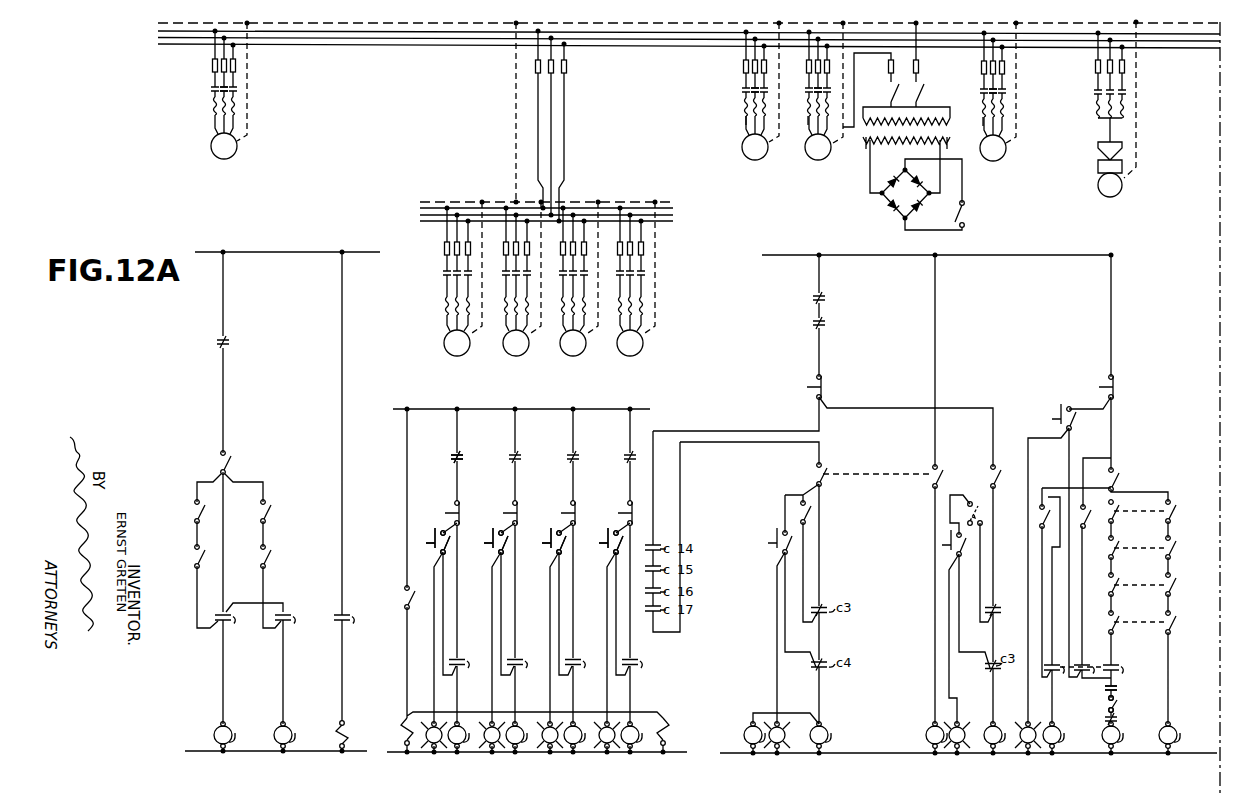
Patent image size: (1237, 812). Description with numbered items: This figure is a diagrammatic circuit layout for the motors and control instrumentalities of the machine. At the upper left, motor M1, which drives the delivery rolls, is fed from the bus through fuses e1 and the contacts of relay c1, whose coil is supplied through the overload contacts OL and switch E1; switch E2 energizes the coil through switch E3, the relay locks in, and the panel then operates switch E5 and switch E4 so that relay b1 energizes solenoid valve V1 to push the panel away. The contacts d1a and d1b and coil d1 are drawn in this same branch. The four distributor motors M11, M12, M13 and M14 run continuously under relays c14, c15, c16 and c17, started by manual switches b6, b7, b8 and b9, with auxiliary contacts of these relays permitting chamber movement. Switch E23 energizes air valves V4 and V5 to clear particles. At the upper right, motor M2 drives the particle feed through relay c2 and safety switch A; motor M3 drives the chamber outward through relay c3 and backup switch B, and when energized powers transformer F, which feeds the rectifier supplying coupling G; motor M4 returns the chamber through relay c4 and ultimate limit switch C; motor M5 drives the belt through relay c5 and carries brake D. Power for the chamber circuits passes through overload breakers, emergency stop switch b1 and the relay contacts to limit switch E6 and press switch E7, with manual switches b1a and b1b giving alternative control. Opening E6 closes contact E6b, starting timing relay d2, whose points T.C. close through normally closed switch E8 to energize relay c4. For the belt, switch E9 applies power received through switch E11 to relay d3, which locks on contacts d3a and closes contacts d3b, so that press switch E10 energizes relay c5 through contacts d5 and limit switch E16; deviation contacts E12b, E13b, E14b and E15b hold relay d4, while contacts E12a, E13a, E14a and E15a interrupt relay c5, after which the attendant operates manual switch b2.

The motor M1 is at (224, 94).
The fuses e1 is at (250, 102).
The relay c1 is at (198, 91).
The motor M2 is at (755, 95).
The series control safety switch A is at (740, 129).
The relay c2 is at (734, 97).
The motor M3 is at (818, 95).
The safety limit switch B is at (807, 130).
The relay c3 is at (802, 98).
The motor M4 is at (993, 96).
The safety ultimate limit switch C is at (974, 130).
The relay c4 is at (973, 98).
The motor M5 is at (1110, 185).
The relay c5 is at (1094, 97).
The brake D is at (1094, 155).
The transformer F is at (887, 95).
The electro-mechanical coupling G is at (968, 208).
The motor M11 is at (457, 281).
The motor M12 is at (516, 281).
The fan motor M13 is at (573, 281).
The fan motor M14 is at (630, 281).
The overload contacts OL is at (687, 509).
The switch E1 is at (218, 465).
The switch E2 is at (194, 511).
The switch E3 is at (192, 561).
The switch E4 is at (267, 557).
The switch E5 is at (267, 510).
The relay contact d1a is at (295, 629).
The relay contact d1b is at (353, 629).
The relay d1 is at (294, 736).
The solenoid valve V1 is at (350, 730).
The switch E23 is at (404, 604).
The solenoid operated valve V4 is at (402, 722).
The solenoid operated valve V5 is at (669, 722).
The relay c14 is at (428, 282).
The relay c15 is at (488, 282).
The relay c16 is at (545, 282).
The relay c17 is at (602, 282).
The manually operated momentarily closable switches b6 is at (435, 527).
The manually operated momentarily closable switches b7 is at (493, 527).
The manually operated momentarily closable switches b8 is at (551, 527).
The manually operated momentarily closable switches b9 is at (608, 527).
The emergency manual stop switch b1 is at (809, 391).
The limit switch E6 is at (812, 473).
The switch E7 is at (810, 515).
The manual switch b1a is at (774, 540).
The contact E6b is at (937, 467).
The switch E8 is at (1002, 474).
The timing contact points T.C. is at (980, 512).
The timing control relay d2 is at (913, 745).
The manual switch b1b is at (943, 545).
The manual control switch b2 is at (1082, 403).
The switch E10 is at (1079, 500).
The switch E11 is at (1116, 479).
The limit switch E9 is at (1038, 523).
The safety limit switch contact E12a is at (1130, 509).
The safety limit switch contact E12b is at (1187, 509).
The safety limit switch contact E13a is at (1130, 546).
The safety limit switch contact E13b is at (1187, 546).
The safety limit switch contact E14a is at (1130, 582).
The safety limit switch contact E14b is at (1187, 582).
The safety limit switch contact E15a is at (1130, 620).
The safety limit switch contact E15b is at (1187, 620).
The contact points d3a is at (1045, 685).
The contact points d3b is at (1076, 685).
The contacts d5 is at (1120, 686).
The safety limit switch E16 is at (1129, 704).
The relay d3 is at (1052, 758).
The relay d4 is at (1172, 758).